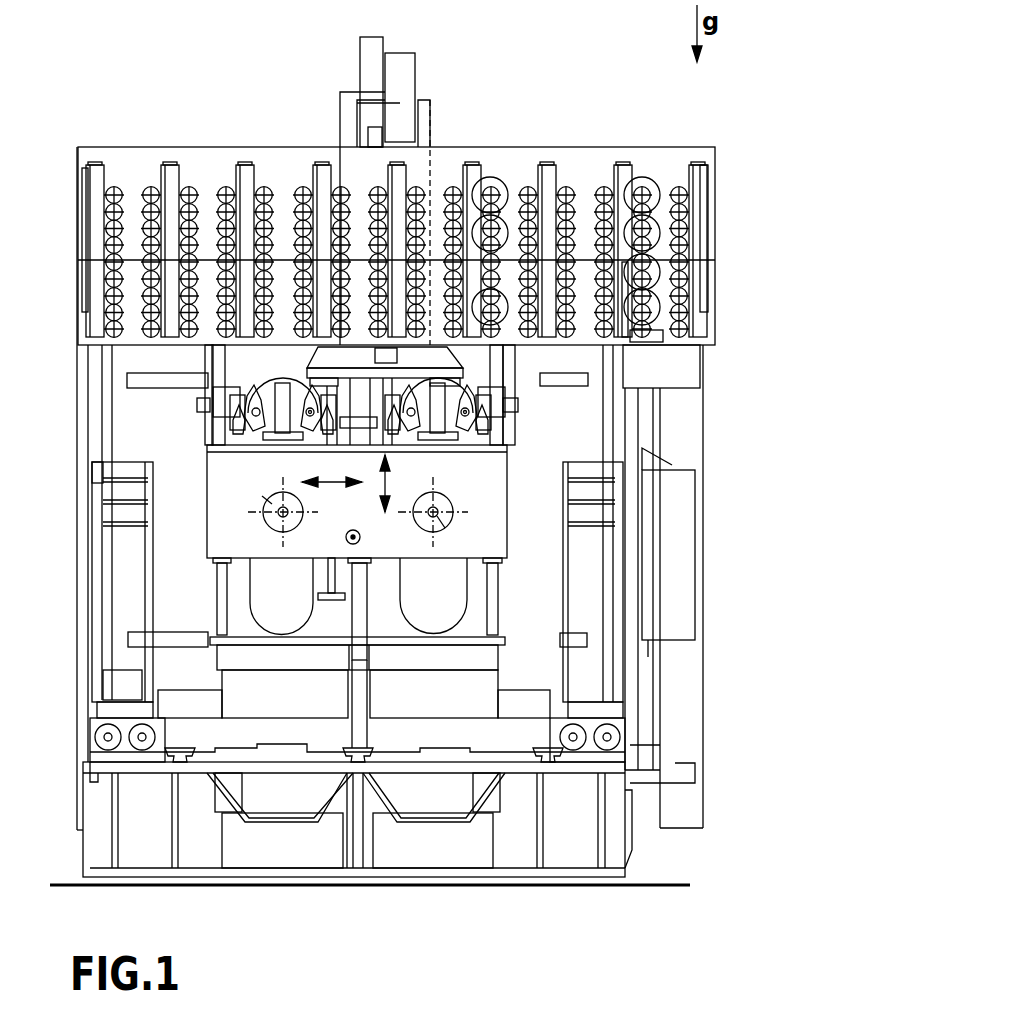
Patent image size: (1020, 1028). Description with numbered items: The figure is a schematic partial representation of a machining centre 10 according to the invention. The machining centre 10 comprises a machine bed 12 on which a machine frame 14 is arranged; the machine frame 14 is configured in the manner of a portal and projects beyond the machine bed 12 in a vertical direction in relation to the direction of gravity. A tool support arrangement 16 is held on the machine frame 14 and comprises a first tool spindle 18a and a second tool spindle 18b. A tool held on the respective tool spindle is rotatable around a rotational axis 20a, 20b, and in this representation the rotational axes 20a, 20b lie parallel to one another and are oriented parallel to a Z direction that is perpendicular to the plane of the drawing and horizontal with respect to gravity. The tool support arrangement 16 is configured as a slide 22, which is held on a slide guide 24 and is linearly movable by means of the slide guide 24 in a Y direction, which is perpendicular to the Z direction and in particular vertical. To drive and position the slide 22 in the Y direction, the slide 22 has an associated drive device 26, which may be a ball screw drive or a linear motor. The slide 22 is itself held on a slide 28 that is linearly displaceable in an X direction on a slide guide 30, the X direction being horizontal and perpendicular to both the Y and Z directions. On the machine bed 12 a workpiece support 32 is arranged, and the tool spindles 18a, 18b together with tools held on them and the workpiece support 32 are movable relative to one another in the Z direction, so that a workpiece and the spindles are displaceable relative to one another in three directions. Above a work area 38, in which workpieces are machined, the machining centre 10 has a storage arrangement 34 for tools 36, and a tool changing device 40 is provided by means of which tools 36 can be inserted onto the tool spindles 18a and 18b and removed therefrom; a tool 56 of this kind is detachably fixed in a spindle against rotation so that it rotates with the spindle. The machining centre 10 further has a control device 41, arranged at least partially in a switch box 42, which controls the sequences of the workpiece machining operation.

The machining centre 10 is at (56, 424).
The machine bed 12 is at (98, 848).
The machine frame 14 is at (78, 537).
The tool support arrangement 16 is at (487, 500).
The first tool spindle 18a is at (273, 520).
The second tool spindle 18b is at (442, 497).
The rotational axis 20a is at (258, 493).
The rotational axis 20b is at (440, 522).
The slide 22 is at (503, 462).
The slide guide 24 is at (512, 575).
The drive device 26 is at (397, 82).
The slide 28 is at (213, 603).
The slide guide 30 is at (578, 372).
The workpiece support 32 is at (381, 616).
The storage arrangement 34 is at (127, 136).
The tools 36 is at (193, 183).
The work area 38 is at (271, 722).
The tool changing device 40 is at (252, 371).
The control device 41 is at (685, 545).
The switch box 42 is at (683, 497).
The tool 56 is at (283, 514).